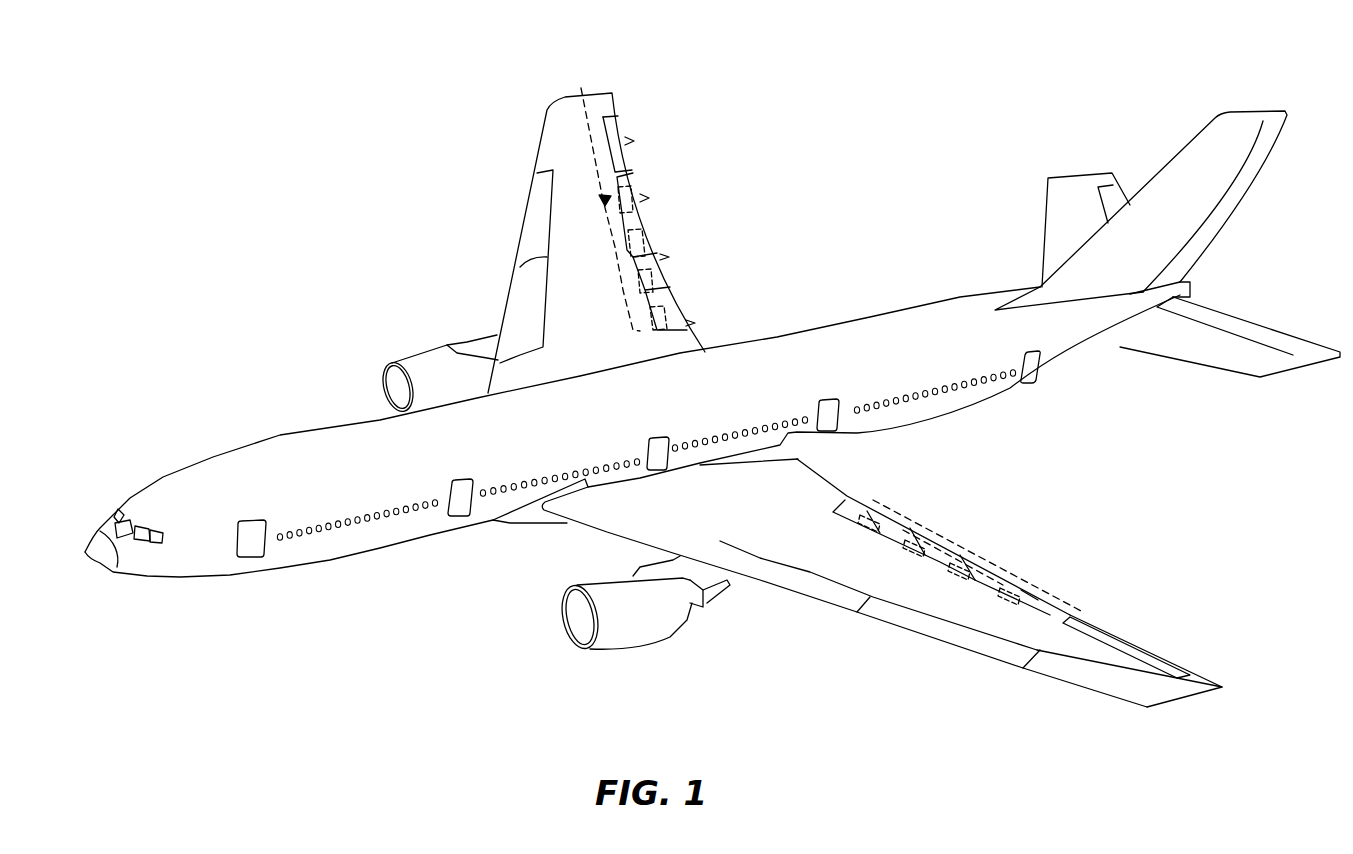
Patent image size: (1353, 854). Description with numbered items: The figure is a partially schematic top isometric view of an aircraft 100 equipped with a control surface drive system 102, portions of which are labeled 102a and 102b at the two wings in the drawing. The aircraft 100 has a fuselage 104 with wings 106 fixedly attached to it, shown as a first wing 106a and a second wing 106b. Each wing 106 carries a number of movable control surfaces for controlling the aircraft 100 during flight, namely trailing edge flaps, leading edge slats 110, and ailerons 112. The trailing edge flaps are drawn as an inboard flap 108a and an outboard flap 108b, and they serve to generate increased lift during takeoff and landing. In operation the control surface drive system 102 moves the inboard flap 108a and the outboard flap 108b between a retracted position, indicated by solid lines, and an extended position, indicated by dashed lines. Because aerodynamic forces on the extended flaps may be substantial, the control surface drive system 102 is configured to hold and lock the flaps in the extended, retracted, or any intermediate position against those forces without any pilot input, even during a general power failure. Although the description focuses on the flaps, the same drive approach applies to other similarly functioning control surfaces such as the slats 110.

The aircraft 100 is at (282, 216).
The control surface drive system 102 is at (596, 229).
The sensor line segment 102a is at (882, 500).
The sensor line segment 102b is at (583, 84).
The fuselage 104 is at (253, 440).
The wing 106 is at (524, 203).
The first wing 106a is at (1165, 697).
The second wing 106b is at (553, 125).
The inboard flap 108a is at (660, 292).
The outboard flap 108b is at (630, 175).
The leading edge slat 110 is at (523, 298).
The aileron 112 is at (613, 120).